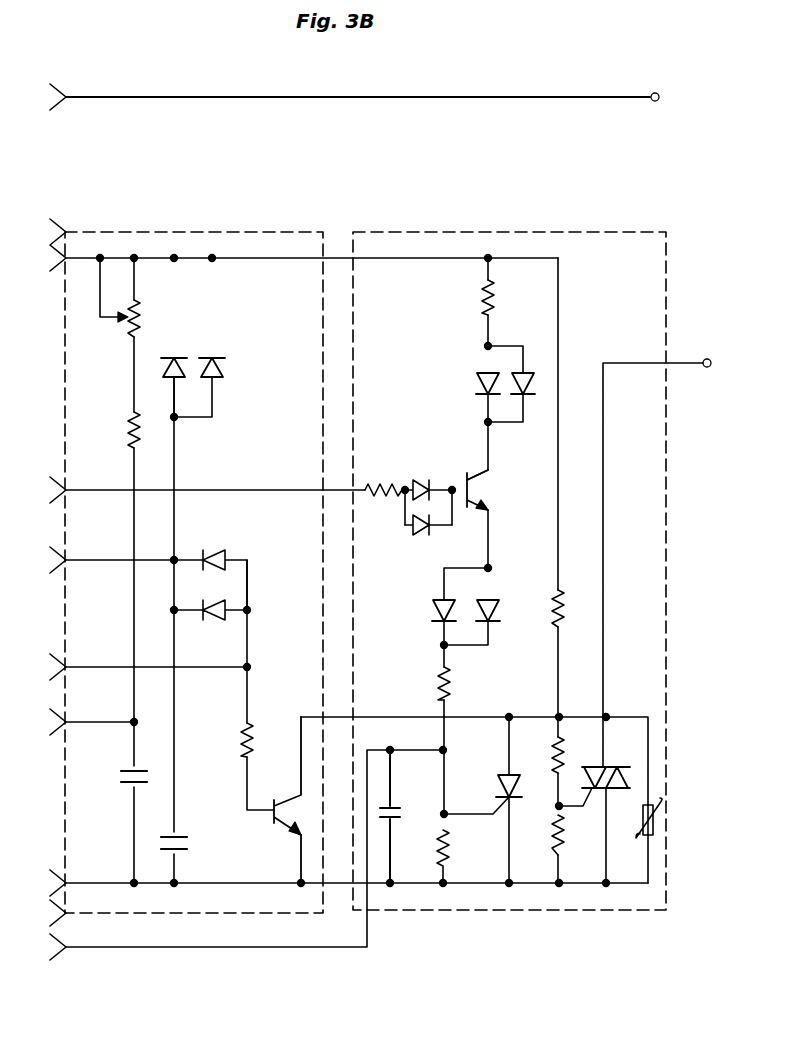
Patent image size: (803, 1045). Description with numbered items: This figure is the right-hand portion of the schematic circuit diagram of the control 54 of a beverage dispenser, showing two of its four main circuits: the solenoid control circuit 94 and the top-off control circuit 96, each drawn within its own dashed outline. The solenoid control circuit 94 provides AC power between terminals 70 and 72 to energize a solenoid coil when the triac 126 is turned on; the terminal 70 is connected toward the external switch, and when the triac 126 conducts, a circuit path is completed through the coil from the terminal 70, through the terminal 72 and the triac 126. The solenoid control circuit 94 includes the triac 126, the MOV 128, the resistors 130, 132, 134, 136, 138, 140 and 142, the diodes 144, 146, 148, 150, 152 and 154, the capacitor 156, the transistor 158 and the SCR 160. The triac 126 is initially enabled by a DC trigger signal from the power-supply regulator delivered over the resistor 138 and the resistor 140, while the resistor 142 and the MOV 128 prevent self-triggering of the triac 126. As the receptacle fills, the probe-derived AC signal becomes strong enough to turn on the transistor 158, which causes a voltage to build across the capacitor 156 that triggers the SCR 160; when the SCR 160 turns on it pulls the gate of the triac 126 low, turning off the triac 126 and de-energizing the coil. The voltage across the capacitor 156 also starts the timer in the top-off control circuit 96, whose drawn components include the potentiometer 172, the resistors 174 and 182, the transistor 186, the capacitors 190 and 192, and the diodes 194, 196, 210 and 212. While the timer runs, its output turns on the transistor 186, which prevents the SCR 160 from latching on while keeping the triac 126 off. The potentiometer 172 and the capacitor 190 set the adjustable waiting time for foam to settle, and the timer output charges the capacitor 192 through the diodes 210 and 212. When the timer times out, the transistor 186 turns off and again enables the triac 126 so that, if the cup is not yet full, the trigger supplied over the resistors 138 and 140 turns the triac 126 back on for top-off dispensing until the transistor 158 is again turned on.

The control 54 is at (205, 77).
The terminal 70 is at (658, 102).
The terminal 72 is at (705, 368).
The solenoid control circuit 94 is at (500, 228).
The top-off control circuit 96 is at (245, 228).
The triac 126 is at (606, 780).
The MOV 128 is at (658, 828).
The resistor 130 is at (372, 486).
The resistor 132 is at (482, 300).
The resistor 134 is at (450, 690).
The resistor 136 is at (448, 858).
The resistor 138 is at (552, 596).
The resistor 140 is at (554, 746).
The resistor 142 is at (564, 850).
The diode 144 is at (419, 482).
The diode 146 is at (420, 534).
The diode 148 is at (476, 386).
The diode 150 is at (530, 378).
The diode 152 is at (432, 612).
The diode 154 is at (496, 614).
The capacitor 156 is at (398, 820).
The transistor 158 is at (482, 500).
The SCR 160 is at (508, 772).
The potentiometer 172 is at (124, 338).
The resistor 174 is at (124, 436).
The resistor 182 is at (245, 730).
The transistor 186 is at (266, 826).
The capacitor 190 is at (126, 782).
The capacitor 192 is at (188, 850).
The diode 194 is at (226, 366).
The diode 196 is at (180, 380).
The diode 210 is at (214, 548).
The diode 212 is at (218, 616).